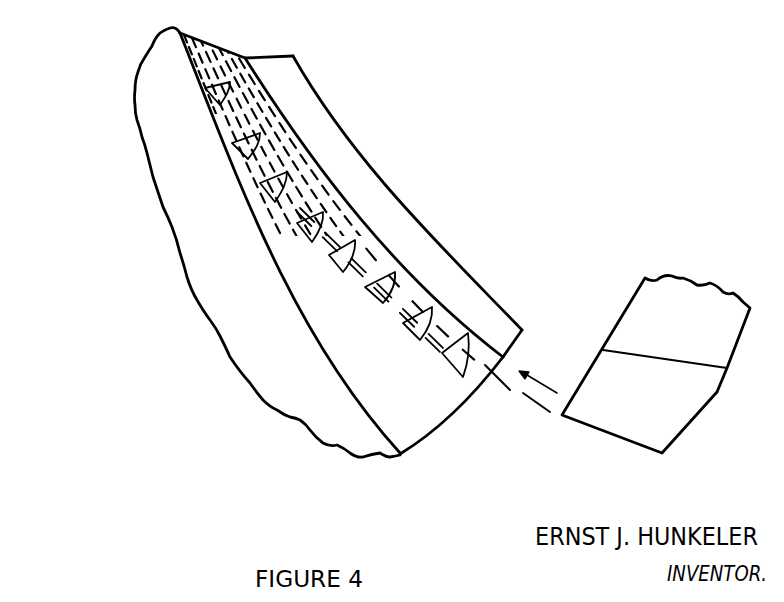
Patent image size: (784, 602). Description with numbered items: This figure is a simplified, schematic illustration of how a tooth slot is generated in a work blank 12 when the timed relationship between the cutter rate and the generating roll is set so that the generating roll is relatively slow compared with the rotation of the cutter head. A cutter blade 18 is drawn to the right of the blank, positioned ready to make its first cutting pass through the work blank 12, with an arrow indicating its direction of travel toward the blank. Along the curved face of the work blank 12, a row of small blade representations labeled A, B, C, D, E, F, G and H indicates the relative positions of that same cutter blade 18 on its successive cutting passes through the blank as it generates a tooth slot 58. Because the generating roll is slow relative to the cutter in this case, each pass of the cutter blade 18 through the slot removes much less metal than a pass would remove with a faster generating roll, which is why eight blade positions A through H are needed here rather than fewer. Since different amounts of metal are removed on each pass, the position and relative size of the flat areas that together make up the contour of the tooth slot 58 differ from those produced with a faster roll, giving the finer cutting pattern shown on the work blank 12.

The work blank 12 is at (350, 158).
The tooth slot 58 is at (400, 408).
The cutter blade 18 is at (625, 418).
The cutter blade position A is at (450, 355).
The cutter blade position B is at (411, 324).
The cutter blade position C is at (373, 288).
The cutter blade position D is at (338, 256).
The cutter blade position E is at (305, 224).
The cutter blade position F is at (267, 184).
The cutter blade position G is at (240, 143).
The cutter blade position H is at (212, 90).